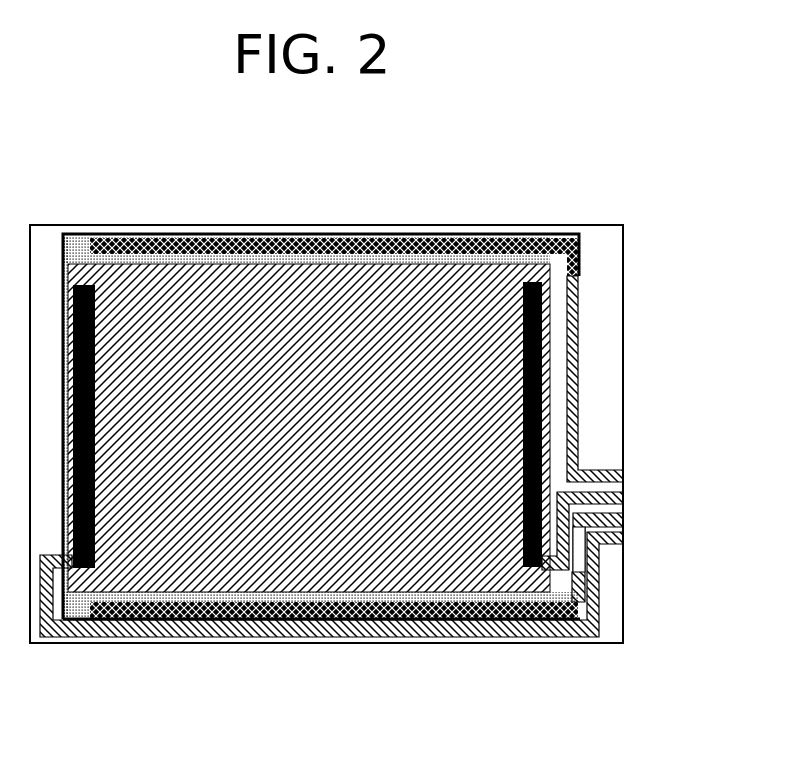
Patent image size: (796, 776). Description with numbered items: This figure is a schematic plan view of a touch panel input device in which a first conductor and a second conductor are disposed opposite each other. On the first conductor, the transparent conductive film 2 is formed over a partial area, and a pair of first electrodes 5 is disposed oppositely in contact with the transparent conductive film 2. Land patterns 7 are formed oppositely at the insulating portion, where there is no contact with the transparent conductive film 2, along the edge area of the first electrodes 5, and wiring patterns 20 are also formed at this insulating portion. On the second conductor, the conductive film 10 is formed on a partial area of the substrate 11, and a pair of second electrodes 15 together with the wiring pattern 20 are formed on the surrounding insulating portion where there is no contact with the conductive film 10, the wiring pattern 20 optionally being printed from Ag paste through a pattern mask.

The transparent conductive film 2 is at (342, 258).
The first electrodes 5 is at (298, 605).
The land patterns 7 is at (580, 262).
The conductive film 10 is at (437, 307).
The substrate 11 is at (605, 337).
The second electrodes 15 is at (520, 440).
The wiring patterns 20 is at (602, 633).